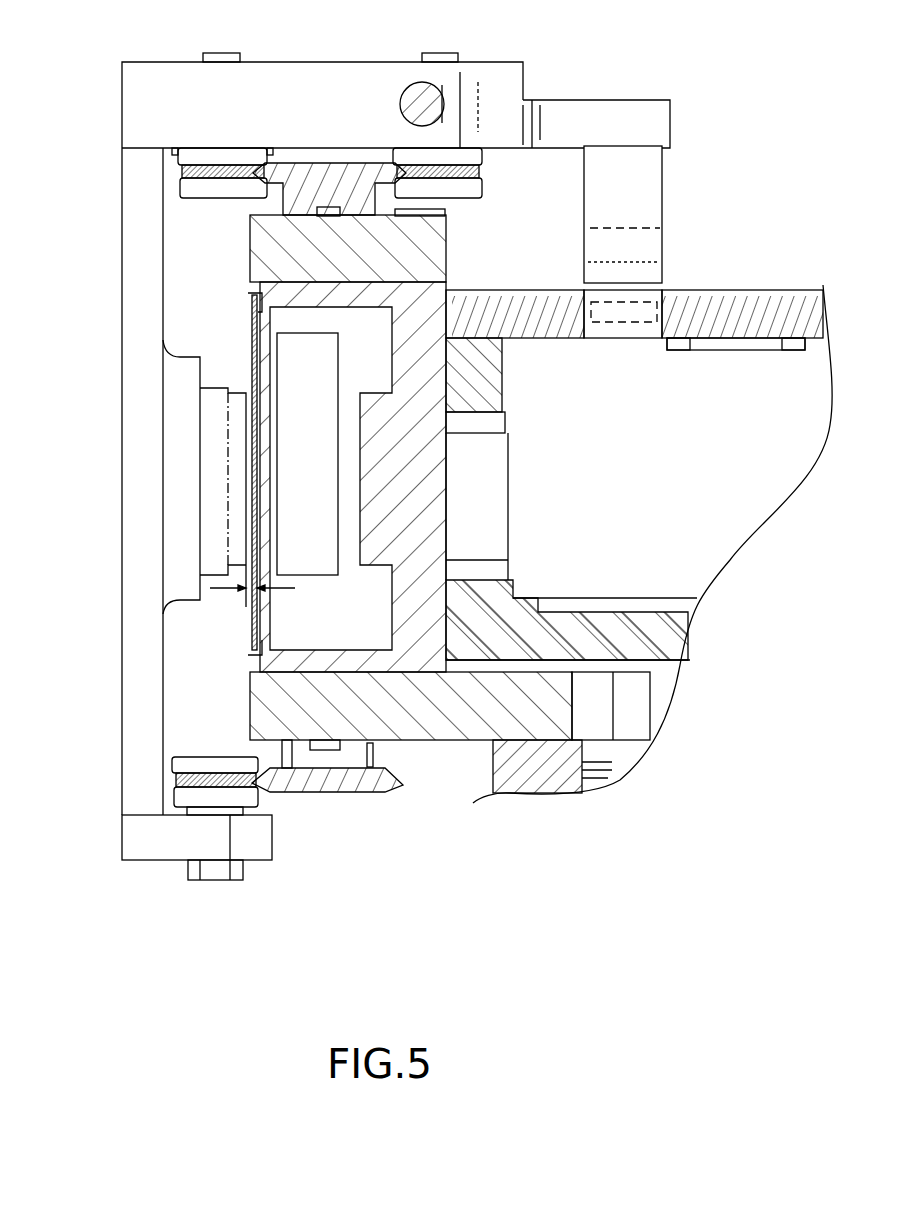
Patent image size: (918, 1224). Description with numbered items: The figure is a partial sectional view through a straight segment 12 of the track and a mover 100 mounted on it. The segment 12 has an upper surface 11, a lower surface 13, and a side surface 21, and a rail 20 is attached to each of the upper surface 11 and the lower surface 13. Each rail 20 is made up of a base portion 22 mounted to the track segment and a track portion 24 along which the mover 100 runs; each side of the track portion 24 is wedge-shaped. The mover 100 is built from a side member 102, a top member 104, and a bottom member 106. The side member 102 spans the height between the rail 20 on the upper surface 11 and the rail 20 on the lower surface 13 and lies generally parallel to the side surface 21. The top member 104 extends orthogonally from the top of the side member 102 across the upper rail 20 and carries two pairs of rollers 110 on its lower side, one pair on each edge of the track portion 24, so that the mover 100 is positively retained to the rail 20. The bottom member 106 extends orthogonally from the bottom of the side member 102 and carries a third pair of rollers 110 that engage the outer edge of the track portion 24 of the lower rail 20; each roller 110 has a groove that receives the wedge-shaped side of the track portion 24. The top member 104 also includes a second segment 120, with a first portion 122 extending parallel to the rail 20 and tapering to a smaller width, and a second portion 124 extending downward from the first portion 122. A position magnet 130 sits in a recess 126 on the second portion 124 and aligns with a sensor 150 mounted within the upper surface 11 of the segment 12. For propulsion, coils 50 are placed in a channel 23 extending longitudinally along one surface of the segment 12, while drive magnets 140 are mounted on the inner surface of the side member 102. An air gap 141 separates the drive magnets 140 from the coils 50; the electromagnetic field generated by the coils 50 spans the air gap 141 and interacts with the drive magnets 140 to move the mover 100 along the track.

The mover 100 is at (122, 100).
The side member 102 is at (135, 317).
The top member 104 is at (268, 78).
The bottom member 106 is at (257, 842).
The rollers 110 is at (222, 158).
The upper surface 11 is at (490, 288).
The straight segment 12 is at (420, 482).
The lower surface 13 is at (647, 676).
The rail 20 is at (535, 715).
The side surface 21 is at (248, 305).
The base portion 22 is at (353, 264).
The channel 23 is at (390, 338).
The track portion 24 is at (308, 195).
The coil 50 is at (320, 482).
The second segment 120 is at (633, 100).
The first portion 122 is at (563, 122).
The second portion 124 is at (633, 165).
The recess 126 is at (615, 230).
The position magnet 130 is at (648, 250).
The drive magnet 140 is at (237, 387).
The air gap 141 is at (283, 590).
The sensor 150 is at (632, 324).